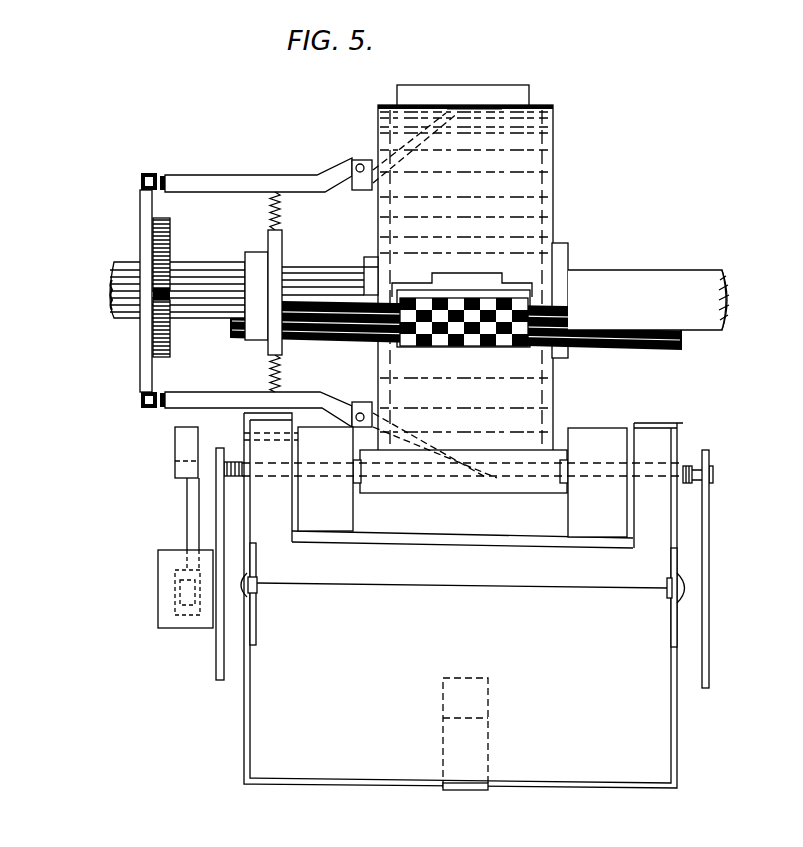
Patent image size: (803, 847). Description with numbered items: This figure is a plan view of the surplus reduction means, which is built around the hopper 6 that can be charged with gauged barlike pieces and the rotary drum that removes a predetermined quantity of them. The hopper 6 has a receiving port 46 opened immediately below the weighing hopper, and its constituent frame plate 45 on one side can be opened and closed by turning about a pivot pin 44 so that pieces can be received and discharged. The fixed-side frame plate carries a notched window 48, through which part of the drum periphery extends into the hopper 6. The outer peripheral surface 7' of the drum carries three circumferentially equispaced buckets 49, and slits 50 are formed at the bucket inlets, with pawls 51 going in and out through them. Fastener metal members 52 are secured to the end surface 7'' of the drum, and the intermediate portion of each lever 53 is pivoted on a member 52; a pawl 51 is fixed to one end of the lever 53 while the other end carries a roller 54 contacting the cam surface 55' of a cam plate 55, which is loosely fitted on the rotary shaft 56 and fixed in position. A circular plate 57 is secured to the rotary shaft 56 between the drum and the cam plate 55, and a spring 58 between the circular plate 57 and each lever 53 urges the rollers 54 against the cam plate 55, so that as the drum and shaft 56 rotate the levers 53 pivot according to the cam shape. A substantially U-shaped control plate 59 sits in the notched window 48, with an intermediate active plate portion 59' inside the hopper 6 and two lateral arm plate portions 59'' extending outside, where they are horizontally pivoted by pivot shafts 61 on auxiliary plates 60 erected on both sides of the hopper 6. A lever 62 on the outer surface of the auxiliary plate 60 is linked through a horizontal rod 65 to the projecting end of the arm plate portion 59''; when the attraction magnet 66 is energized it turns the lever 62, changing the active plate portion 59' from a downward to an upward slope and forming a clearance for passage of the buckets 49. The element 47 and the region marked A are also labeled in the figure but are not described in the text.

The hopper 6 is at (318, 781).
The outer peripheral surface 7' is at (483, 294).
The end surface 7'' is at (464, 440).
The pivot pin 44 is at (259, 591).
The constituent frame plate 45 is at (680, 721).
The receiving port 46 is at (276, 730).
The pivot shaft 47 is at (577, 584).
The notched window 48 is at (372, 538).
The buckets 49 is at (461, 97).
The slits 50 is at (471, 292).
The pawls 51 is at (448, 113).
The fastener metal members 52 is at (356, 160).
The lever 53 is at (240, 161).
The roller 54 is at (147, 173).
The cam plate 55 is at (130, 299).
The cam surface 55' is at (118, 291).
The rotary shaft 56 is at (108, 297).
The circular plate 57 is at (283, 252).
The spring 58 is at (283, 213).
The control plate 59 is at (463, 480).
The active plate portion 59' is at (525, 481).
The lateral arm plate portions 59'' is at (325, 478).
The auxiliary plates 60 is at (217, 658).
The pivot shafts 61 is at (232, 477).
The lever 62 is at (187, 503).
The horizontal rod 65 is at (198, 440).
The attraction magnet 66 is at (160, 591).
The wire bundle A is at (336, 336).